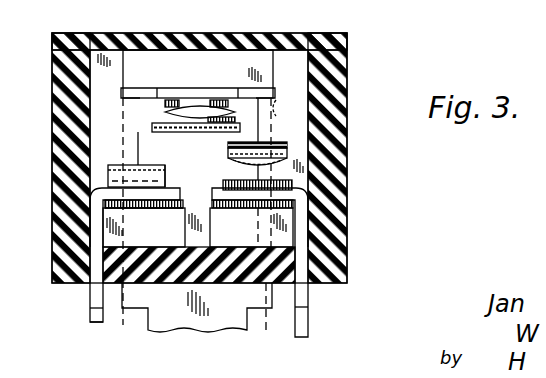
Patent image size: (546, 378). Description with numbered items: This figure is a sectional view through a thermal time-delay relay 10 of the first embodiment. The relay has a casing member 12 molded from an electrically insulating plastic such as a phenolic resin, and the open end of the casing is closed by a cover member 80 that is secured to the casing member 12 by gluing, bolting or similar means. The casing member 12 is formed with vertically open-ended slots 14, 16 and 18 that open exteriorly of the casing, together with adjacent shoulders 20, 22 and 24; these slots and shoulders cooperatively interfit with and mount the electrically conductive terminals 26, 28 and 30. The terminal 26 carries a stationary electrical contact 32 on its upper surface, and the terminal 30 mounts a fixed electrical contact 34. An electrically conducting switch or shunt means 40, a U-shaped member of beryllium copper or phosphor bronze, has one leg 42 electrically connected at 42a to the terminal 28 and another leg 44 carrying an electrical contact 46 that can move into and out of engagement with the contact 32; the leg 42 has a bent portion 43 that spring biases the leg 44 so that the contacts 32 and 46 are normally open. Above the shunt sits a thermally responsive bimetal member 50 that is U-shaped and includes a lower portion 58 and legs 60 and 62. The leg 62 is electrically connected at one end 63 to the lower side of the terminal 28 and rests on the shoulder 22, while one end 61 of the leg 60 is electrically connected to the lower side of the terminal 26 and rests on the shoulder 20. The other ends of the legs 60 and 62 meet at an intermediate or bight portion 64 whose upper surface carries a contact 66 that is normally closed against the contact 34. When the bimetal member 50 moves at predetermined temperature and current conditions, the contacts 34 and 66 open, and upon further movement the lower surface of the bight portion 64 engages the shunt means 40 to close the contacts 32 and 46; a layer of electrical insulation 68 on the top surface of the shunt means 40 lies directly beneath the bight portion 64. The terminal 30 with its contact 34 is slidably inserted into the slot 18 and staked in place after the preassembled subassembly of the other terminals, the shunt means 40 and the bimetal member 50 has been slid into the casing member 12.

The thermal time-delay relay 10 is at (379, 85).
The casing member 12 is at (337, 57).
The slot 14 is at (303, 259).
The slot 16 is at (90, 276).
The slot 18 is at (272, 106).
The shoulder 20 is at (265, 208).
The shoulder 22 is at (130, 209).
The shoulder 24 is at (122, 96).
The terminal 26 is at (307, 319).
The terminal 28 is at (90, 321).
The terminal 30 is at (195, 89).
The stationary electrical contact 32 is at (309, 158).
The fixed electrical contact 34 is at (173, 103).
The switch means or shunt means 40 is at (225, 153).
The leg 42 is at (148, 170).
The electrical connection 42a is at (166, 183).
The bent portion 43 is at (166, 178).
The leg 44 is at (309, 152).
The electrical contact 46 is at (242, 162).
The thermally responsive member 50 is at (176, 143).
The lower portion 58 is at (182, 203).
The leg 60 is at (241, 116).
The end 61 is at (249, 207).
The leg 62 is at (166, 126).
The end 63 is at (141, 207).
The intermediate or bight portion 64 is at (151, 128).
The contact 66 is at (214, 108).
The layer of electrical insulation 68 is at (277, 140).
The cover member 80 is at (242, 38).